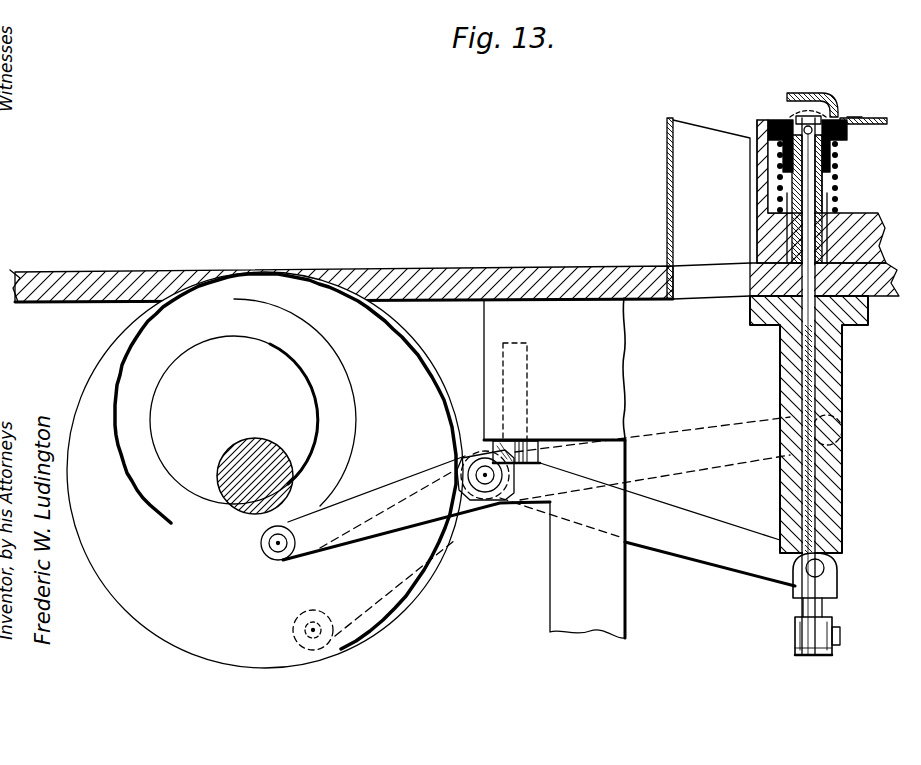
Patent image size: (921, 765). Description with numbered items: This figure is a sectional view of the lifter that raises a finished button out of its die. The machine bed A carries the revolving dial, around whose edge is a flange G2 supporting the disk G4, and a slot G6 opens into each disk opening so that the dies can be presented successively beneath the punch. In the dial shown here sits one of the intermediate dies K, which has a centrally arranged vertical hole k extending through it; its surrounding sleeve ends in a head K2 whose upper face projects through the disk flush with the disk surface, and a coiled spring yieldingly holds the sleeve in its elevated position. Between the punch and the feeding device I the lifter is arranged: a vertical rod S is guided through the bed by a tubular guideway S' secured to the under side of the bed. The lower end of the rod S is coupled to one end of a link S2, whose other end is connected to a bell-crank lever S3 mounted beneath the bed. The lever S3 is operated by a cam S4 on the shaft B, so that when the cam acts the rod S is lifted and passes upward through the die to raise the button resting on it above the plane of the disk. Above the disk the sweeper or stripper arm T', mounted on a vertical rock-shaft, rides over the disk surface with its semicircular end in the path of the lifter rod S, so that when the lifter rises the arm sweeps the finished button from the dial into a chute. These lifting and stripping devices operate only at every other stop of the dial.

The bed plate A is at (380, 456).
The shaft B is at (256, 440).
The cam S4 is at (308, 470).
The bell-crank lever S3 is at (462, 503).
The vertical rod S is at (831, 385).
The tubular guideway S' is at (824, 336).
The link S2 is at (825, 610).
The flange G2 is at (752, 132).
The sweeper or stripper arm T' is at (812, 96).
The disk G4 is at (866, 111).
The slot G6 is at (851, 117).
The head K2 is at (848, 130).
The feeding device I is at (838, 157).
The die K is at (818, 186).
The vertical hole k is at (809, 190).